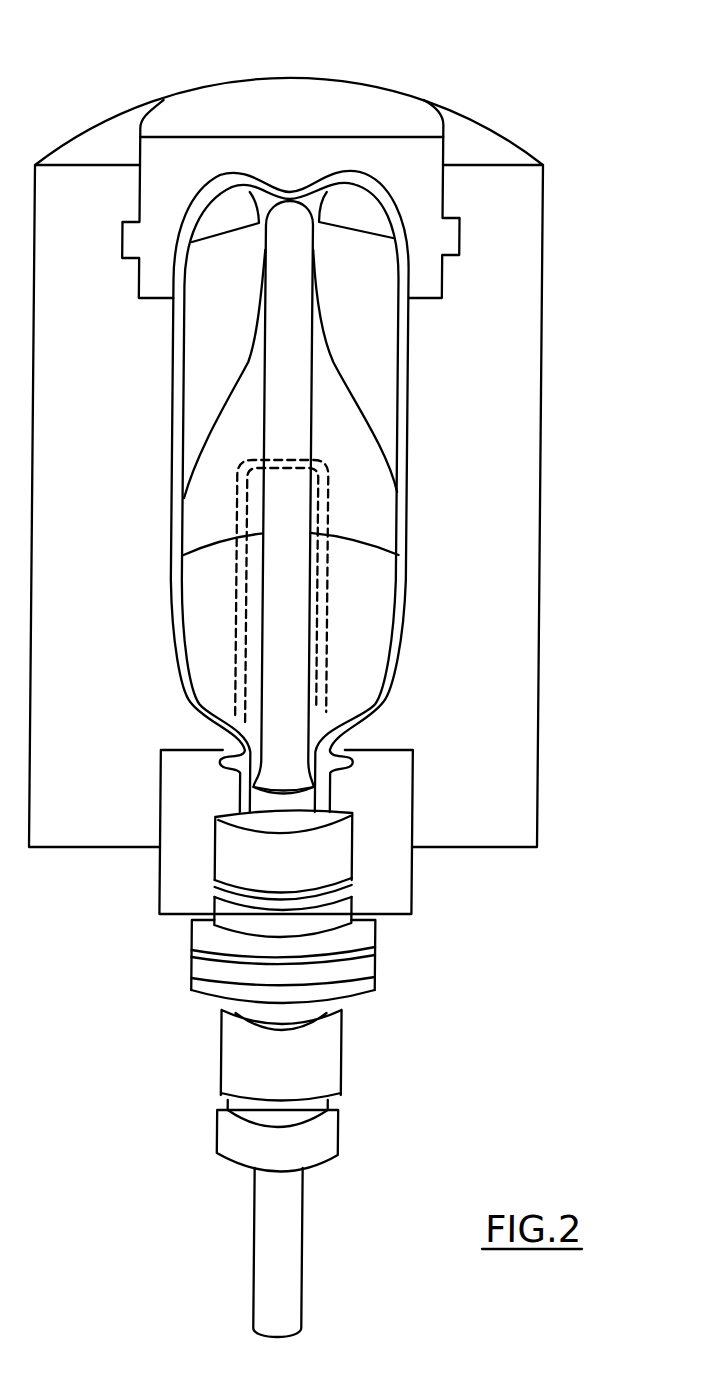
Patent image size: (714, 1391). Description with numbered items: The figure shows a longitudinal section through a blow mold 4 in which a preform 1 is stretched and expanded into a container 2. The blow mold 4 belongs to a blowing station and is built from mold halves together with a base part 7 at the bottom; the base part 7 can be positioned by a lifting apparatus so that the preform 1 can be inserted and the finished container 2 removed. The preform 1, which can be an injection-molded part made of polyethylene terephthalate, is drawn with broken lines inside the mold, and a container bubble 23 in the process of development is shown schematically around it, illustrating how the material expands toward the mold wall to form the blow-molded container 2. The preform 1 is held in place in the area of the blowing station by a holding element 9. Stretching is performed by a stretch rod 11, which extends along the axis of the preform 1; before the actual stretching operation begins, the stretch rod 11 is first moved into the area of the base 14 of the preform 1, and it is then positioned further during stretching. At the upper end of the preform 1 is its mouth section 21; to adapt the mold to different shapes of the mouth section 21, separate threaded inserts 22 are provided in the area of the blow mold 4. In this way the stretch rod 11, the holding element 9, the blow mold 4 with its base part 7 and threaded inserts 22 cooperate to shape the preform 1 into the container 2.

The preform 1 is at (329, 632).
The container 2 is at (402, 402).
The blow mold 4 is at (501, 472).
The base part 7 is at (382, 100).
The holding element 9 is at (369, 985).
The stretch rod 11 is at (262, 1267).
The base 14 is at (326, 463).
The mouth section 21 is at (328, 779).
The threaded inserts 22 is at (399, 873).
The container bubble 23 is at (345, 358).